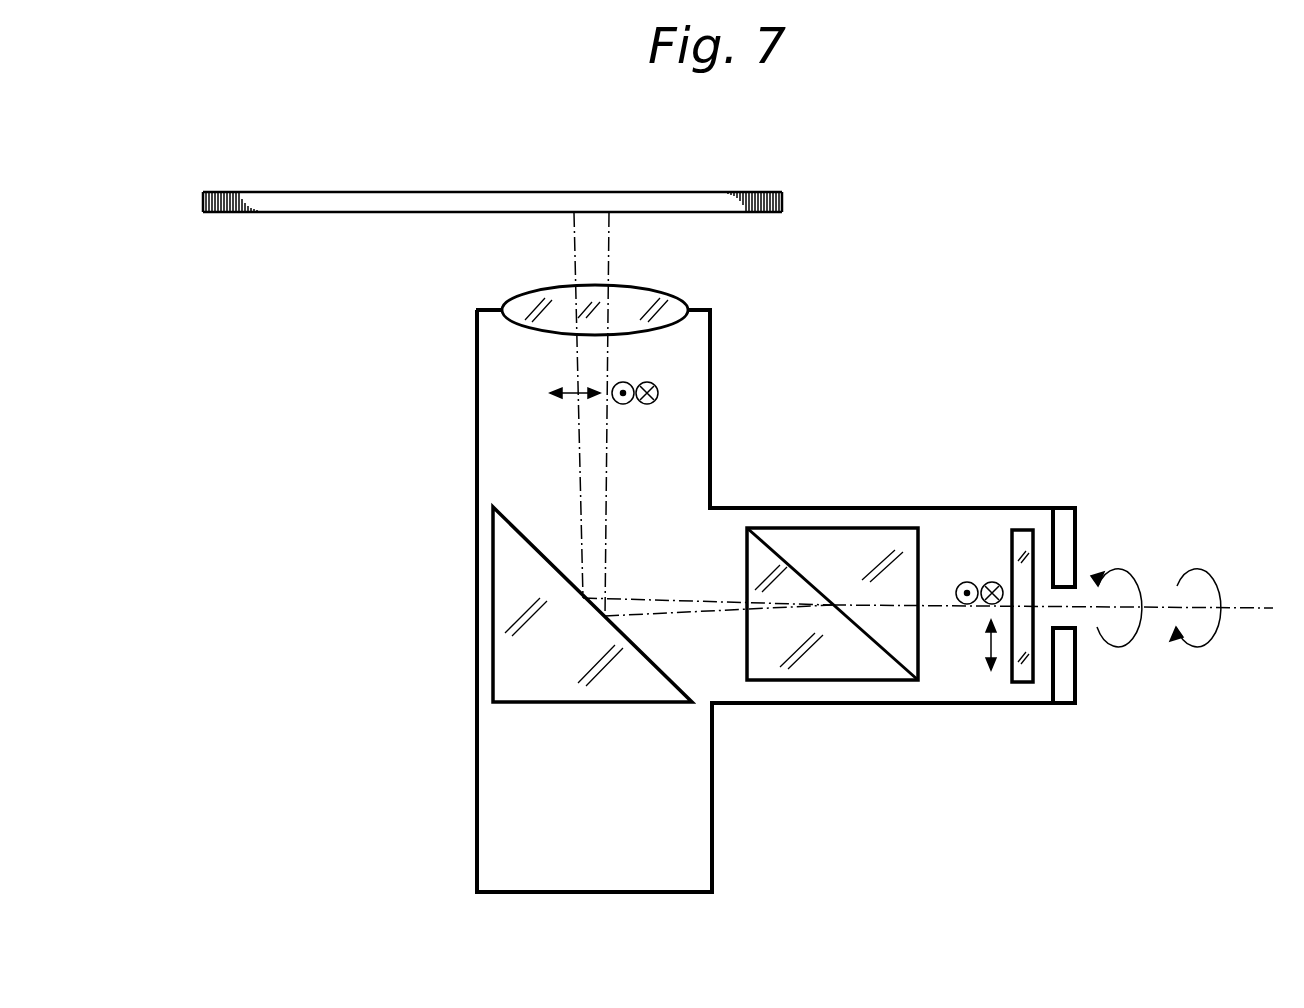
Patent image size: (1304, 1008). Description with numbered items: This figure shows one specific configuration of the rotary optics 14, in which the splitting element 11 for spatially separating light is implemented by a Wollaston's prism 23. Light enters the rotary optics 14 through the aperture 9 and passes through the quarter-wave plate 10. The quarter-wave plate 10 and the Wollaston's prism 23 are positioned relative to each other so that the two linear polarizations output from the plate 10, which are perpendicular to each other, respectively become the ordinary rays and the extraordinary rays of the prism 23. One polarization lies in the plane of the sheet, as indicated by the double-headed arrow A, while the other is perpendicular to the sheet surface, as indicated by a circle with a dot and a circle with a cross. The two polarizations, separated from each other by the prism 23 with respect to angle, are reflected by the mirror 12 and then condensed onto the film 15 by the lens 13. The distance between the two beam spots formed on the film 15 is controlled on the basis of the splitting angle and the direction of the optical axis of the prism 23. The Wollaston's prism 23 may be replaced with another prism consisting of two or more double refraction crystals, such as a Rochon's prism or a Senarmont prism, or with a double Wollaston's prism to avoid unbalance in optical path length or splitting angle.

The aperture 9 is at (1062, 525).
The quarter-wave plate 10 is at (1025, 678).
The splitting element 11 is at (893, 513).
The mirror 12 is at (550, 668).
The lens 13 is at (655, 296).
The rotary optics 14 is at (712, 357).
The film 15 is at (343, 200).
The Wollaston's prism 23 is at (835, 660).
The double-headed arrow A is at (576, 396).